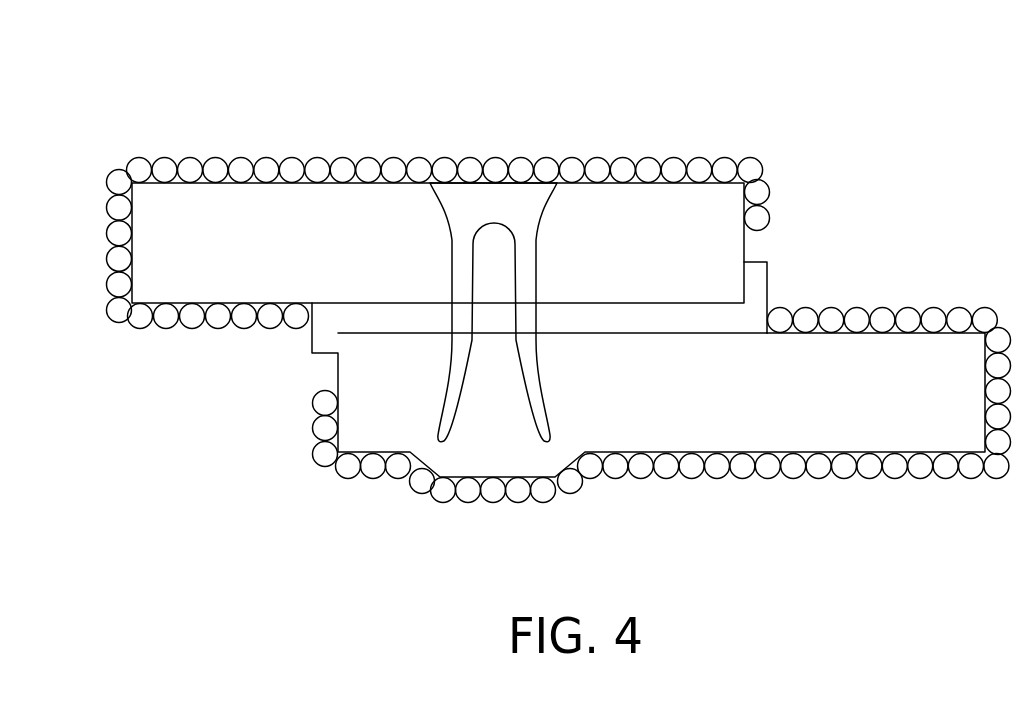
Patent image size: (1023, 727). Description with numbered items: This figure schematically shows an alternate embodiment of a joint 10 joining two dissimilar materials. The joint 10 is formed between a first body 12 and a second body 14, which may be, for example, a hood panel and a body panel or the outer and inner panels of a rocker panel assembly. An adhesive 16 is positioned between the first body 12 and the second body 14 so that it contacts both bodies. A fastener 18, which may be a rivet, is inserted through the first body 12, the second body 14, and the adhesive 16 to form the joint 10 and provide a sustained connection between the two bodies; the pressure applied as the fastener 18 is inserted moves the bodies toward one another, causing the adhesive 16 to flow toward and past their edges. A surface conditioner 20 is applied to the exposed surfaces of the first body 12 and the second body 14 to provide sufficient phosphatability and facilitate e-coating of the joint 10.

The joint 10 is at (214, 105).
The first body 12 is at (707, 222).
The second body 14 is at (838, 428).
The adhesive 16 is at (757, 288).
The fastener 18 is at (485, 196).
The surface conditioner 20 is at (597, 167).